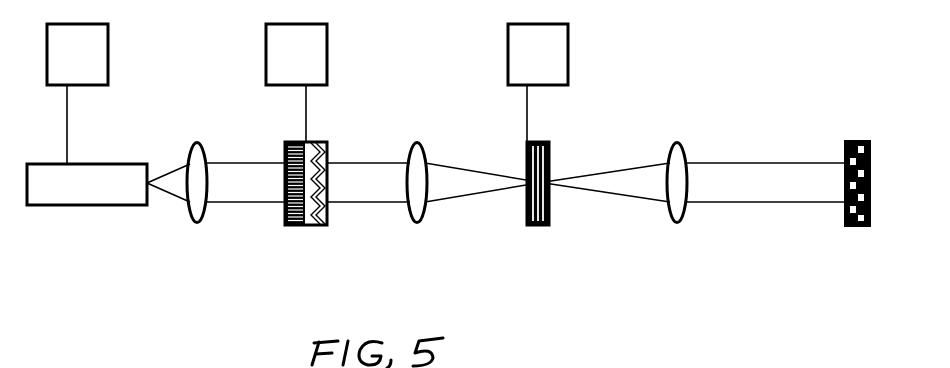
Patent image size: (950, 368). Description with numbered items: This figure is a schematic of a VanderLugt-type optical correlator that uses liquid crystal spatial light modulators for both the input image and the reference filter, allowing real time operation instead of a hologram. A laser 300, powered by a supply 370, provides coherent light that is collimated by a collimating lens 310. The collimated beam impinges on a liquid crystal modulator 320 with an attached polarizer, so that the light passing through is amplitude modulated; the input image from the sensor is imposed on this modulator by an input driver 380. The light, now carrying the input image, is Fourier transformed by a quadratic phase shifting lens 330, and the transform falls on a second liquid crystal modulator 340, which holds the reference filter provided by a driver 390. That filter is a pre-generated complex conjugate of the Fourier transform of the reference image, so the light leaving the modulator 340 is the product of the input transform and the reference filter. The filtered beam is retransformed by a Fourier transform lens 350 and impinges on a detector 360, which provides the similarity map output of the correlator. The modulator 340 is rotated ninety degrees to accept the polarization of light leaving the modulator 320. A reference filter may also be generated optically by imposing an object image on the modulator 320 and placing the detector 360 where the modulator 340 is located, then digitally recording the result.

The laser 300 is at (93, 207).
The collimating lens 310 is at (193, 223).
The liquid crystal modulator 320 is at (300, 226).
The quadratic phase shifting lens 330 is at (415, 223).
The liquid crystal modulator 340 is at (538, 226).
The Fourier transform lens 350 is at (677, 223).
The detector 360 is at (854, 228).
The supply 370 is at (108, 68).
The input driver 380 is at (328, 62).
The driver 390 is at (568, 60).